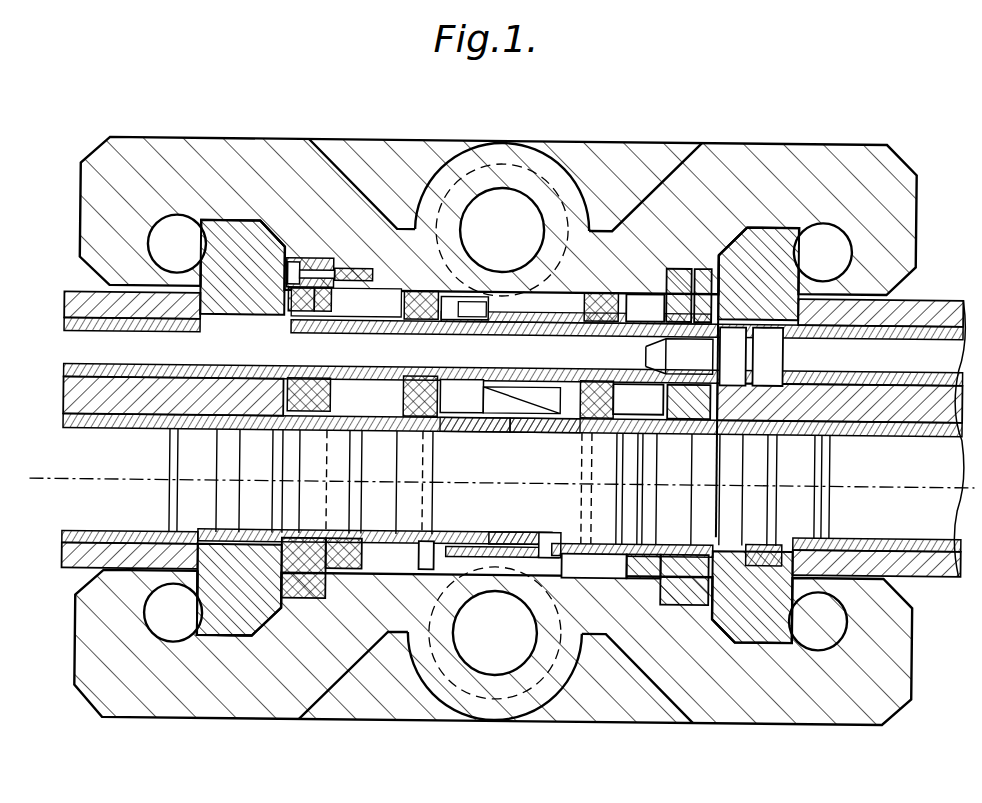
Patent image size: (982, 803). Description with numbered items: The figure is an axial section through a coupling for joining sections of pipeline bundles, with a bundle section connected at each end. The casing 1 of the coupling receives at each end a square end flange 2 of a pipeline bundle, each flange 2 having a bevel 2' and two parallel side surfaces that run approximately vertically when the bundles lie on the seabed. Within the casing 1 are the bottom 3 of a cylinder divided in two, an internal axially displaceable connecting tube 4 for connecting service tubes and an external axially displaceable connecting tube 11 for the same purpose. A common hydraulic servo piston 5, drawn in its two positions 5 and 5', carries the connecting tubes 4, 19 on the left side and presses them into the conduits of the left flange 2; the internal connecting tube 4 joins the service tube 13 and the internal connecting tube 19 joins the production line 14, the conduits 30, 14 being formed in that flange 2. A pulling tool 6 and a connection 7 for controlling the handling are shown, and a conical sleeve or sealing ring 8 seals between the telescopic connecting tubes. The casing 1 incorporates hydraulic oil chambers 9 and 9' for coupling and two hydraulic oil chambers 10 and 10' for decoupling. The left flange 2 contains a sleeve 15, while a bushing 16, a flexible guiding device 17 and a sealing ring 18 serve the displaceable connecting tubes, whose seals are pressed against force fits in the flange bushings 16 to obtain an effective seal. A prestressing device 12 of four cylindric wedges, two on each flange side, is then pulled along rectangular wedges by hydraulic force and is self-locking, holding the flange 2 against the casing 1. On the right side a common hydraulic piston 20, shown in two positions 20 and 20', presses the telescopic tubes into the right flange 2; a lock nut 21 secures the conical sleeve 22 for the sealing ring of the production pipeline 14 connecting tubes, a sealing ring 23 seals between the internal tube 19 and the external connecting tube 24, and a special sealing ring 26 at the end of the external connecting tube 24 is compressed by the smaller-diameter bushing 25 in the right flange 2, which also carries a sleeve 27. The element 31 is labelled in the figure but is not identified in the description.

The casing 1 is at (207, 163).
The end flange 2 is at (512, 365).
The bevel 2' is at (524, 423).
The cylinder bottom 3 is at (320, 264).
The internal axially displaceable connecting tube 4 is at (380, 321).
The common hydraulic servo piston 5 is at (353, 350).
The servo piston second position 5' is at (353, 621).
The pulling tool 6 is at (470, 322).
The connection for controlling the handling 7 is at (509, 200).
The conical sleeve or sealing ring 8 is at (555, 329).
The hydraulic oil chamber for coupling 9 is at (429, 354).
The hydraulic oil chamber for coupling 9' is at (599, 298).
The hydraulic oil chamber for decoupling 10 is at (360, 214).
The hydraulic oil chamber for decoupling 10' is at (663, 262).
The external axially displaceable connecting tube 11 is at (660, 354).
The prestressing device 12 is at (820, 237).
The service tube 13 is at (80, 346).
The production line 14 is at (80, 457).
The sleeve 15 is at (165, 573).
The bushing 16 is at (200, 583).
The flexible guiding device 17 is at (254, 593).
The sealing ring 18 is at (302, 607).
The internal connecting tube 19 is at (426, 556).
The common hydraulic piston 20 is at (639, 283).
The hydraulic piston second position 20' is at (634, 621).
The lock nut 21 is at (456, 547).
The conical sleeve 22 is at (511, 547).
The sealing ring 23 is at (557, 539).
The external connecting tube 24 is at (608, 546).
The bushing 25 is at (773, 547).
The special sealing ring 26 is at (744, 547).
The sleeve 27 is at (801, 544).
The conduit 30 is at (508, 424).
The sleeve 31 is at (572, 427).